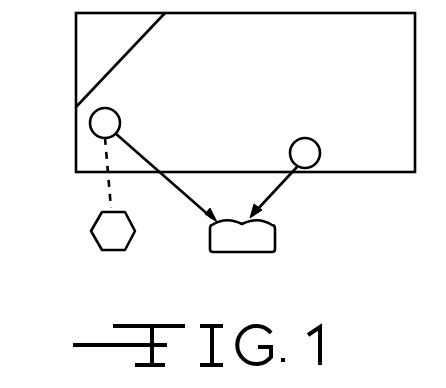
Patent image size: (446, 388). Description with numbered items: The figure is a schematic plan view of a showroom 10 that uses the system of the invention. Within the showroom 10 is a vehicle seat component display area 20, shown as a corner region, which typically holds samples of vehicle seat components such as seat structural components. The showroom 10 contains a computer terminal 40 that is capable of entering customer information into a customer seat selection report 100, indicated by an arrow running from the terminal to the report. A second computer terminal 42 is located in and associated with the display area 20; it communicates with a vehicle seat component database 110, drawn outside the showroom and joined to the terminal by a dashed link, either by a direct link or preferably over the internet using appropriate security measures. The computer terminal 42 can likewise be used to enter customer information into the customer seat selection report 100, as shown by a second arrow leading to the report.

The showroom 10 is at (262, 60).
The vehicle seat component display area 20 is at (116, 50).
The computer terminal 42 is at (119, 114).
The computer terminal 40 is at (317, 144).
The customer seat selection report 100 is at (315, 237).
The vehicle seat component database 110 is at (101, 214).